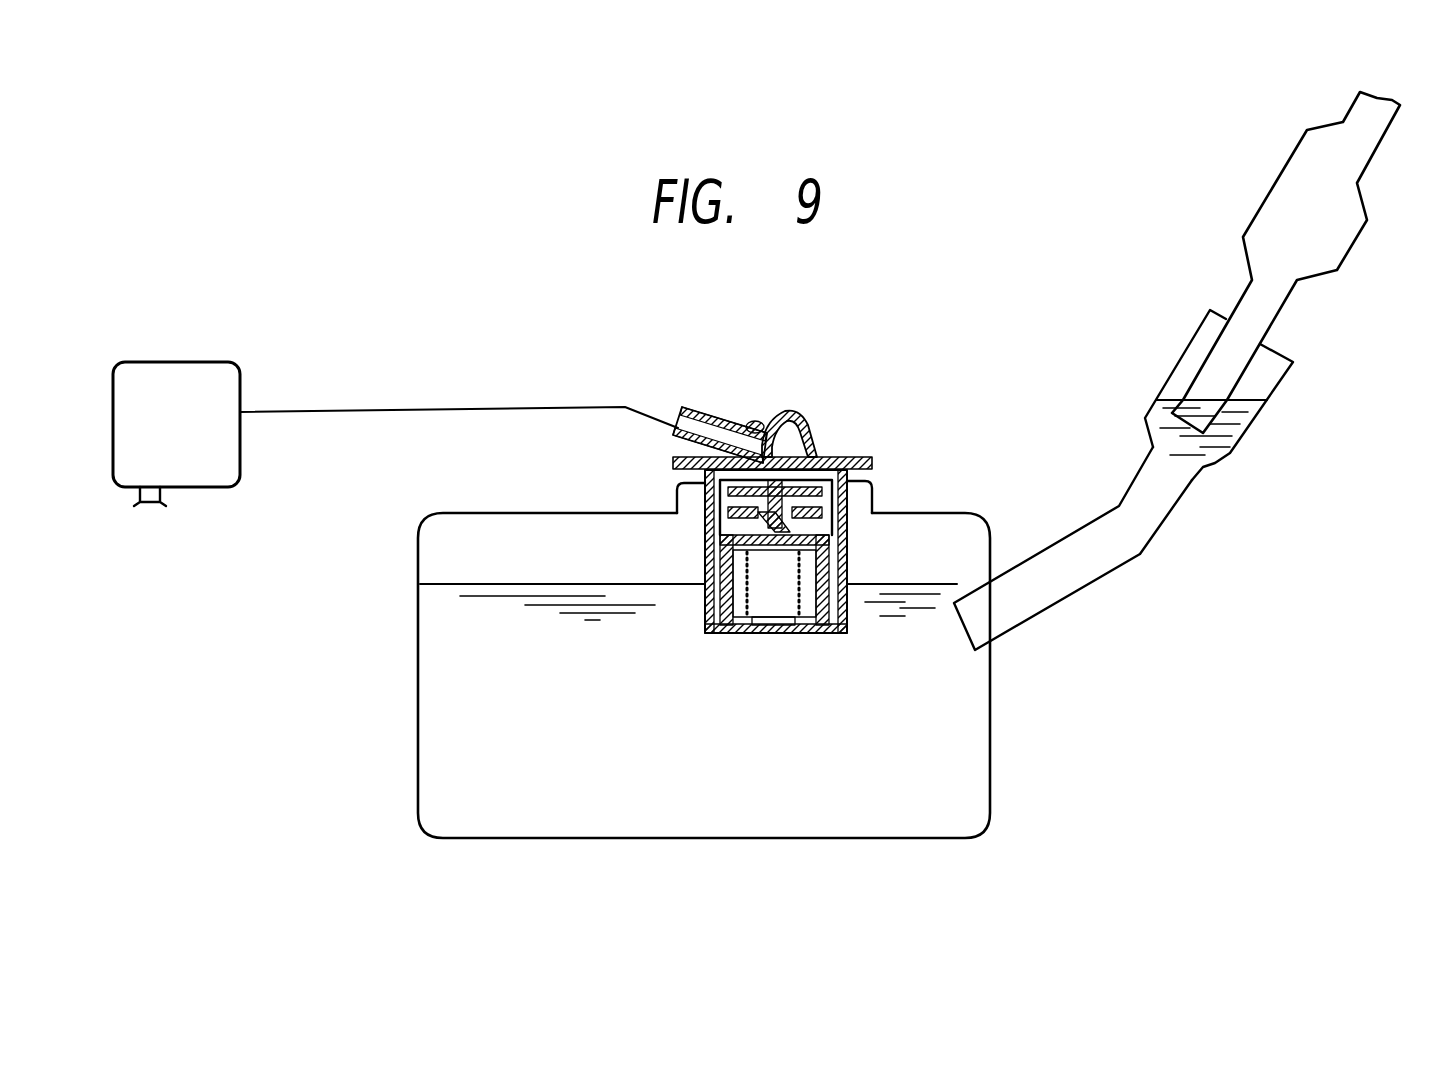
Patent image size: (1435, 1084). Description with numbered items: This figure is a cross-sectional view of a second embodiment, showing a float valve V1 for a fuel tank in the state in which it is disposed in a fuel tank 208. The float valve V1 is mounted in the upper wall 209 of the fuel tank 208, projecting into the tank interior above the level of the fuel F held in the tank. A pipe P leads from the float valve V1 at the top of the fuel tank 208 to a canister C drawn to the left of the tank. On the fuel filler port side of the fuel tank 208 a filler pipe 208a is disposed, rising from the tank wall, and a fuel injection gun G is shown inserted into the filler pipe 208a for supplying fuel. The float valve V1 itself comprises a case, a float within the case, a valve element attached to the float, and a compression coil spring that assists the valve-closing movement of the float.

The fuel F is at (443, 650).
The float valve V1 is at (690, 652).
The upper wall 209 is at (912, 513).
The pipe P is at (523, 407).
The canister C is at (212, 367).
The fuel tank 208 is at (1117, 485).
The filler pipe 208a is at (1126, 550).
The fuel injection gun G is at (1338, 238).